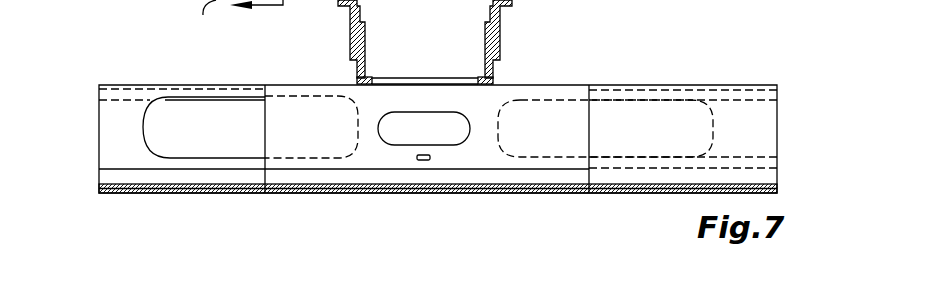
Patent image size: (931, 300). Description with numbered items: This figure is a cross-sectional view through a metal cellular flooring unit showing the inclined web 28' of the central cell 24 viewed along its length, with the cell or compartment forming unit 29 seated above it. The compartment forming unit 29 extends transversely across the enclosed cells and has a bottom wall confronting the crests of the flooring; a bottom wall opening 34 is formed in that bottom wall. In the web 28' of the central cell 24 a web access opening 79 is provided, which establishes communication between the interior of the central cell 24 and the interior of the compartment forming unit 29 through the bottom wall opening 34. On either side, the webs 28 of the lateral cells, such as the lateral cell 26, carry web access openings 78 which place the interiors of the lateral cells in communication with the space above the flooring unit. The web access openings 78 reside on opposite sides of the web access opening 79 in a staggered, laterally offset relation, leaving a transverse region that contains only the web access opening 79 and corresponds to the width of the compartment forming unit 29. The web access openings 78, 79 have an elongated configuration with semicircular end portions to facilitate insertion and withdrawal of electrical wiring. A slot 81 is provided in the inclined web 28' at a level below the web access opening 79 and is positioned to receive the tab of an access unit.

The central cell 24 is at (637, 128).
The lateral cell 26 is at (99, 146).
The web 28 is at (434, 128).
The inclined web of the central cell 28' is at (398, 162).
The cell or compartment forming unit 29 is at (510, 35).
The bottom wall opening 34 is at (433, 80).
The web access opening 78 is at (232, 104).
The web access opening 79 is at (410, 139).
The slot 81 is at (423, 162).